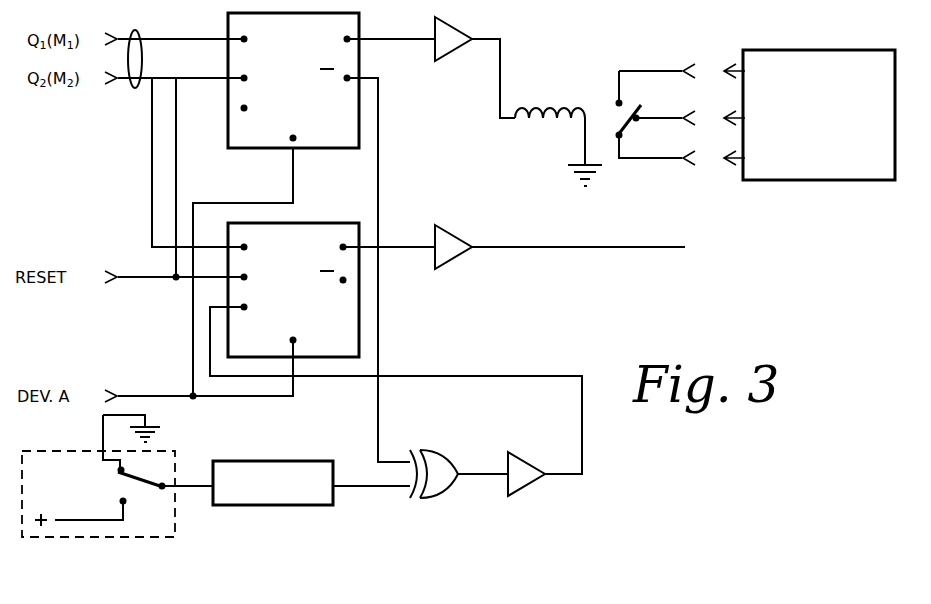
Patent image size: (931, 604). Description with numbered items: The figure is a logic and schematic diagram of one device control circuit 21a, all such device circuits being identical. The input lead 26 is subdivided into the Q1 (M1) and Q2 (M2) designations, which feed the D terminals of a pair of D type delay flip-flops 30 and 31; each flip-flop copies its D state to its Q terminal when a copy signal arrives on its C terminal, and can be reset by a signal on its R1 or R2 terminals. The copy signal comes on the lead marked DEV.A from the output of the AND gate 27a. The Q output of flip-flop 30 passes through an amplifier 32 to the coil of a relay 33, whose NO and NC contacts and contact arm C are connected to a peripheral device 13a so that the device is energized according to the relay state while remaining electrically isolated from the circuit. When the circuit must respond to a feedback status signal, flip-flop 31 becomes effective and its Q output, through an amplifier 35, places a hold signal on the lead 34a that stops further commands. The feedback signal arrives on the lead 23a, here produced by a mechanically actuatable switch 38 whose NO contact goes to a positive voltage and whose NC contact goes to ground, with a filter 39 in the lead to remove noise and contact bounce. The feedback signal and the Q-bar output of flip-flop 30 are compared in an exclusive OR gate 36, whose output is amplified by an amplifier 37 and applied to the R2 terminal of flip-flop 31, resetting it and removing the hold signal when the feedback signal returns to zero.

The lead 26 is at (140, 36).
The D type delay flip-flop 30 is at (325, 140).
The D type delay flip-flop 31 is at (308, 231).
The amplifier 32 is at (450, 42).
The relay 33 is at (596, 94).
The peripheral device 13a is at (848, 164).
The device control circuit 21a is at (462, 185).
The amplifier 35 is at (445, 257).
The lead 34a is at (535, 250).
The AND gate 27a is at (150, 392).
The mechanically actuatable switch 38 is at (144, 490).
The lead 23a is at (195, 488).
The filter 39 is at (317, 498).
The exclusive OR gate 36 is at (437, 486).
The amplifier 37 is at (518, 483).